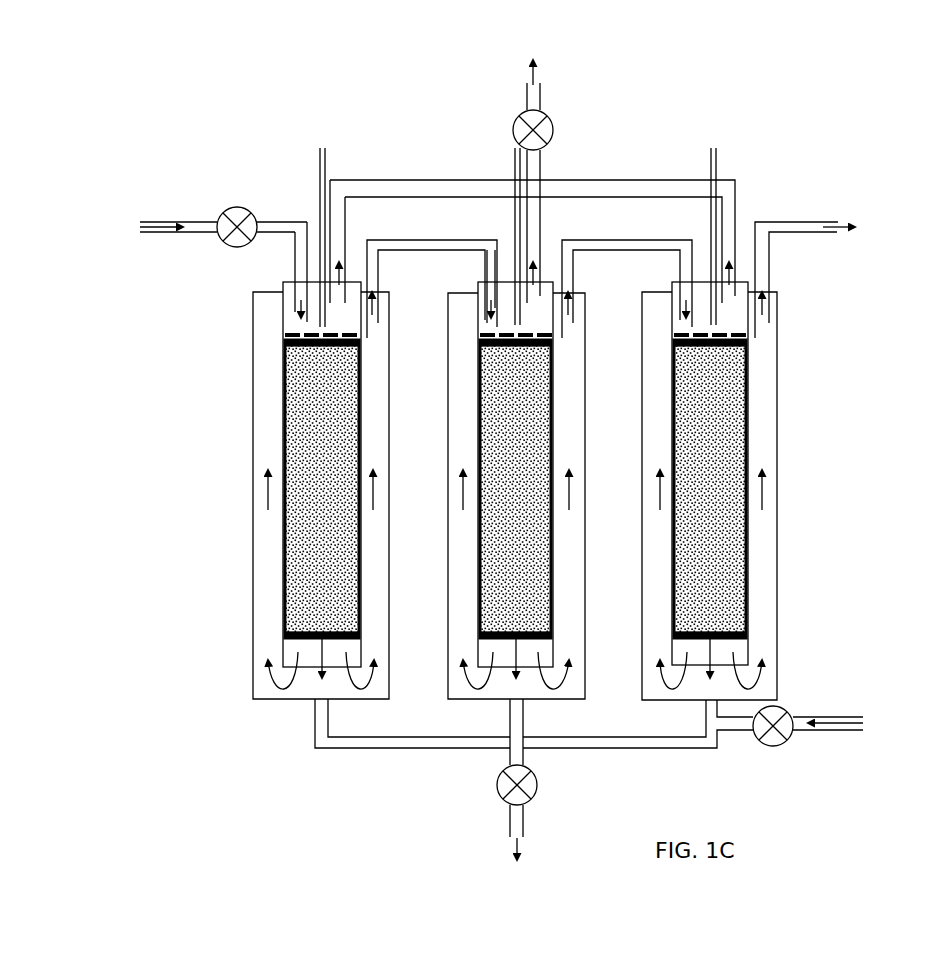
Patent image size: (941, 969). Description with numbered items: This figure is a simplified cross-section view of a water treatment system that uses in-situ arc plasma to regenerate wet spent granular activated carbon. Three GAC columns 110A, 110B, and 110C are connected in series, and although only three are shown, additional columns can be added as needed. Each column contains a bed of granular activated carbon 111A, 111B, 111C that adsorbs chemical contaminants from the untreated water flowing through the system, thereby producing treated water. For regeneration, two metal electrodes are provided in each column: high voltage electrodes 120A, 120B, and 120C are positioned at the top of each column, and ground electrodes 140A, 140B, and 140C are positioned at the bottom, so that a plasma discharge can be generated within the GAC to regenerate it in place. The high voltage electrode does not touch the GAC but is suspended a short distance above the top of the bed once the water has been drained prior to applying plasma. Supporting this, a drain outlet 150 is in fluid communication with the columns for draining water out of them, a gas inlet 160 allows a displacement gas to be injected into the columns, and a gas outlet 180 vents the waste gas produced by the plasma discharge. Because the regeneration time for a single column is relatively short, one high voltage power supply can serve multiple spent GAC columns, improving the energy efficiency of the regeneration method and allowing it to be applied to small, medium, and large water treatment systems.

The first GAC column 110A is at (283, 545).
The second GAC column 110B is at (478, 528).
The third GAC column 110C is at (672, 532).
The granular activated carbon 111A is at (321, 400).
The granular activated carbon 111B is at (516, 400).
The granular activated carbon 111C is at (710, 400).
The high voltage electrode 120A is at (320, 170).
The high voltage electrode 120B is at (515, 170).
The high voltage electrode 120C is at (707, 167).
The ground electrode 140A is at (285, 618).
The ground electrode 140B is at (478, 603).
The ground electrode 140C is at (672, 604).
The drain outlet 150 is at (507, 820).
The gas inlet 160 is at (797, 732).
The gas outlet 180 is at (527, 103).